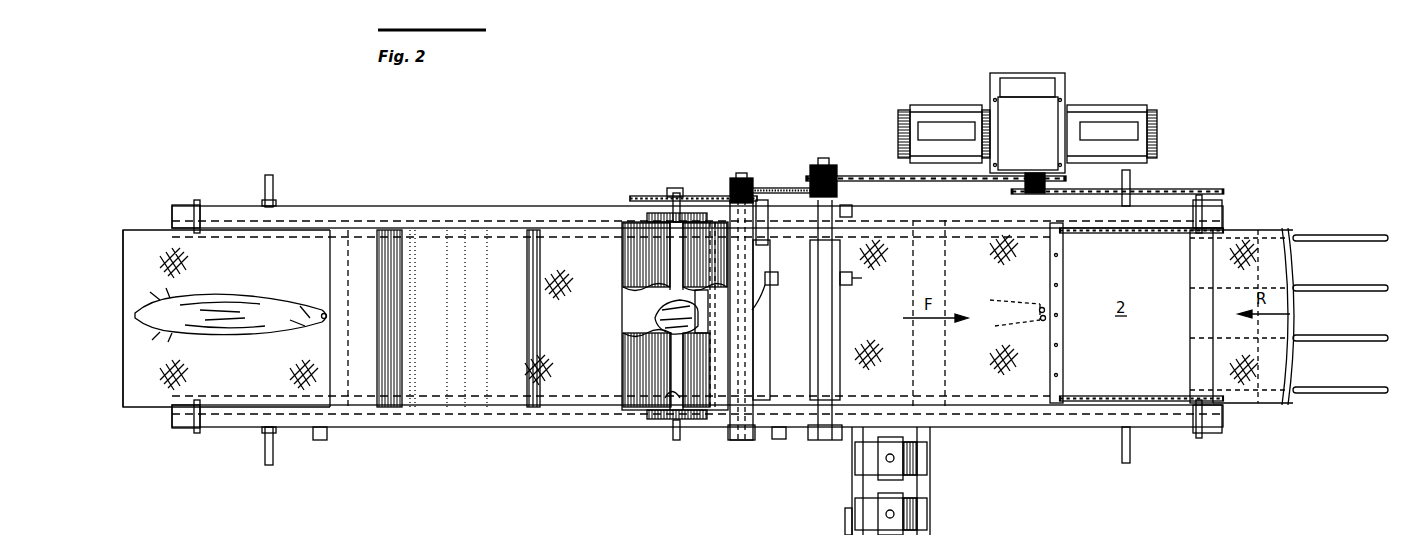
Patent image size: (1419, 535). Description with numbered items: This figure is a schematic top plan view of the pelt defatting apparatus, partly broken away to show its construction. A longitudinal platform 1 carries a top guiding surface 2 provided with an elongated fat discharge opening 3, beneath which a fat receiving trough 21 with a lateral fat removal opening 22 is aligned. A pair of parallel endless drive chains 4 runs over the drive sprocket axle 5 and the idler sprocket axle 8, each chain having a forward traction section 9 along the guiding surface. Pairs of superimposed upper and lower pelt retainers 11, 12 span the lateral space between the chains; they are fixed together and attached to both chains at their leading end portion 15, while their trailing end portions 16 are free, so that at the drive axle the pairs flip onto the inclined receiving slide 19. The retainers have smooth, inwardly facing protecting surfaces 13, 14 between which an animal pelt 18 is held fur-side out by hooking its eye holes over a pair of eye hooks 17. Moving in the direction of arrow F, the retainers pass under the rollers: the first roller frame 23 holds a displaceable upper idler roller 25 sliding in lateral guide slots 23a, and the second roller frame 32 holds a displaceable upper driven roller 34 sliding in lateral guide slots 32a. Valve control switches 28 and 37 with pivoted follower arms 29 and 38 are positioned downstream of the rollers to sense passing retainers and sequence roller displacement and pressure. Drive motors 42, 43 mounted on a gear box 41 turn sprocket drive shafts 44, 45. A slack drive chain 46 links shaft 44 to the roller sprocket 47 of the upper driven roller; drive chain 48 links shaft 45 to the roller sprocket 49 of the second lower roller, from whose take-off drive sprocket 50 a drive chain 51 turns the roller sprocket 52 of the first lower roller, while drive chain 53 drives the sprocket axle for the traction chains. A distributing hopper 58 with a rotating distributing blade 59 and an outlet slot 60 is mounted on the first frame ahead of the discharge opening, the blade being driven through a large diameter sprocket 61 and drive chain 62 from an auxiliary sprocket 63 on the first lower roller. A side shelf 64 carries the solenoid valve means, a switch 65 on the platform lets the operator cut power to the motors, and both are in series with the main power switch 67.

The longitudinal platform 1 is at (318, 206).
The top guiding surface 2 is at (245, 222).
The elongated fat discharge opening 3 is at (762, 318).
The endless drive chains 4 is at (390, 245).
The drive sprocket axle 5 is at (1215, 205).
The idler sprocket axle 8 is at (172, 212).
The forward traction section 9 is at (492, 232).
The upper pelt retainer 11 is at (575, 240).
The lower pelt retainer 12 is at (1272, 395).
The protecting surface 13 is at (458, 385).
The protecting surface 14 is at (132, 385).
The leading end portion 15 is at (350, 245).
The trailing end portions 16 is at (453, 245).
The eye hooks 17 is at (322, 307).
The animal pelt 18 is at (235, 334).
The inclined receiving slide 19 is at (1338, 236).
The fat receiving trough 21 is at (575, 345).
The lateral fat removal opening 22 is at (800, 222).
The first roller frame 23 is at (730, 195).
The lateral guide slots 23a is at (735, 200).
The upper idler roller 25 is at (765, 268).
The valve control switch 28 is at (778, 278).
The follower arm 29 is at (780, 285).
The second roller frame 32 is at (852, 208).
The lateral guide slots 32a is at (812, 195).
The upper driven roller 34 is at (850, 365).
The valve control switch 37 is at (852, 275).
The follower arm 38 is at (862, 279).
The gear box 41 is at (1035, 105).
The drive motor 42 is at (950, 115).
The drive motor 43 is at (1135, 112).
The sprocket drive shaft 44 is at (1030, 173).
The sprocket drive shaft 45 is at (1065, 168).
The drive chain 46 is at (944, 180).
The roller sprocket 47 is at (822, 158).
The drive chain 48 is at (888, 176).
The roller sprocket 49 is at (824, 160).
The take-off drive sprocket 50 is at (826, 165).
The drive chain 51 is at (780, 190).
The roller sprocket 52 is at (742, 175).
The drive chain 53 is at (1180, 192).
The distributing hopper 58 is at (622, 258).
The rotating distributing blade 59 is at (660, 245).
The outlet slot 60 is at (672, 398).
The large diameter sprocket 61 is at (668, 190).
The drive chain 62 is at (660, 195).
The auxiliary sprocket 63 is at (750, 188).
The side shelf 64 is at (852, 475).
The switch 65 is at (318, 440).
The main power switch 67 is at (778, 440).